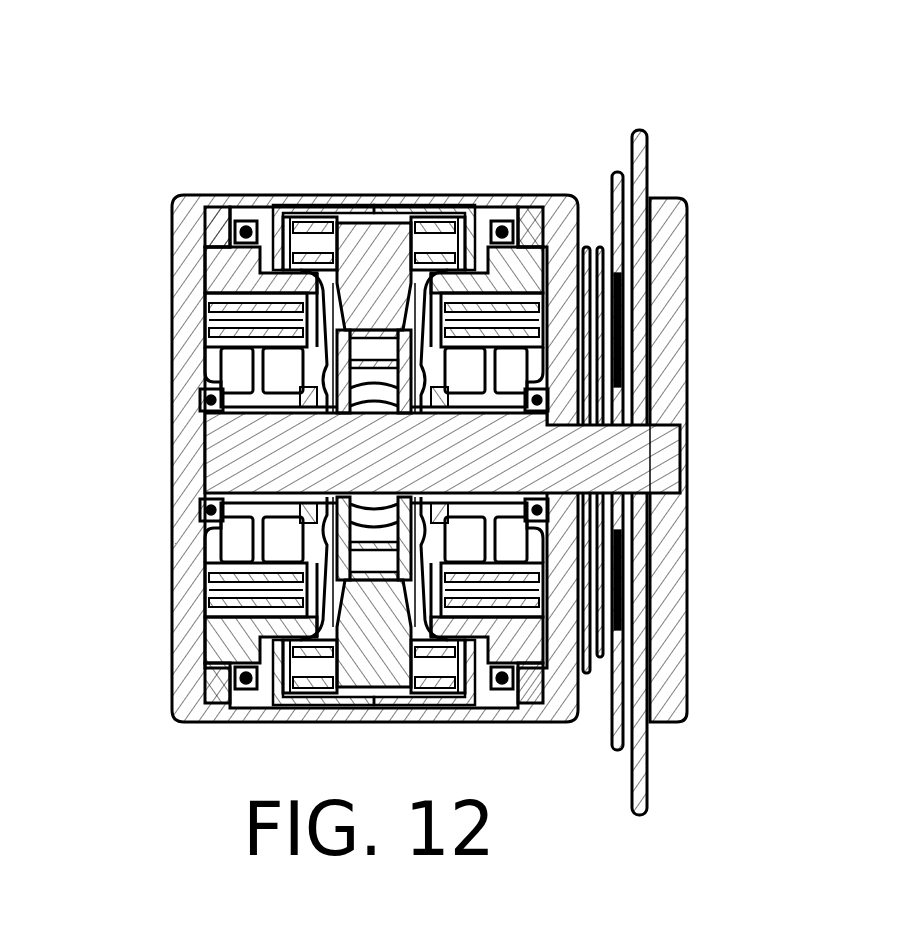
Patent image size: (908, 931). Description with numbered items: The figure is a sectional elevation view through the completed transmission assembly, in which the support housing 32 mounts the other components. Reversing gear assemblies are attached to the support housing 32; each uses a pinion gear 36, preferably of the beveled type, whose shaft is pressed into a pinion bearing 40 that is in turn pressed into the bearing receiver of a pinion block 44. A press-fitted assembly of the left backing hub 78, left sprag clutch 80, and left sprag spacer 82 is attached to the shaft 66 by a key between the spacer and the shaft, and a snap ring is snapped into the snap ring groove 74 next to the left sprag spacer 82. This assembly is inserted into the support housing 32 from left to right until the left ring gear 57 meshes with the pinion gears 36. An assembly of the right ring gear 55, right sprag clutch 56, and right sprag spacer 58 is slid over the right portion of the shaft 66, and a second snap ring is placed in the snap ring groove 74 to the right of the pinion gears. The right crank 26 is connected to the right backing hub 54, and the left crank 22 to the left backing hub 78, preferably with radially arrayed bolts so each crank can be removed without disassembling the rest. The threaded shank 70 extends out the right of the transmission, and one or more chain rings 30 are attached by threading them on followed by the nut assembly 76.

The left crank 22 is at (175, 198).
The right crank 26 is at (560, 200).
The chain rings 30 is at (587, 310).
The support housing 32 is at (466, 205).
The pinion gear 36 is at (361, 240).
The pinion bearing 40 is at (283, 212).
The pinion block 44 is at (298, 228).
The right backing hub 54 is at (513, 270).
The right ring gear 55 is at (405, 285).
The right sprag clutch 56 is at (565, 255).
The left ring gear 57 is at (325, 578).
The right sprag spacer 58 is at (548, 322).
The shaft 66 is at (655, 440).
The threaded shank 70 is at (668, 430).
The snap ring groove 74 is at (210, 410).
The nut assembly 76 is at (680, 505).
The left backing hub 78 is at (218, 245).
The left sprag clutch 80 is at (240, 300).
The left sprag spacer 82 is at (225, 352).